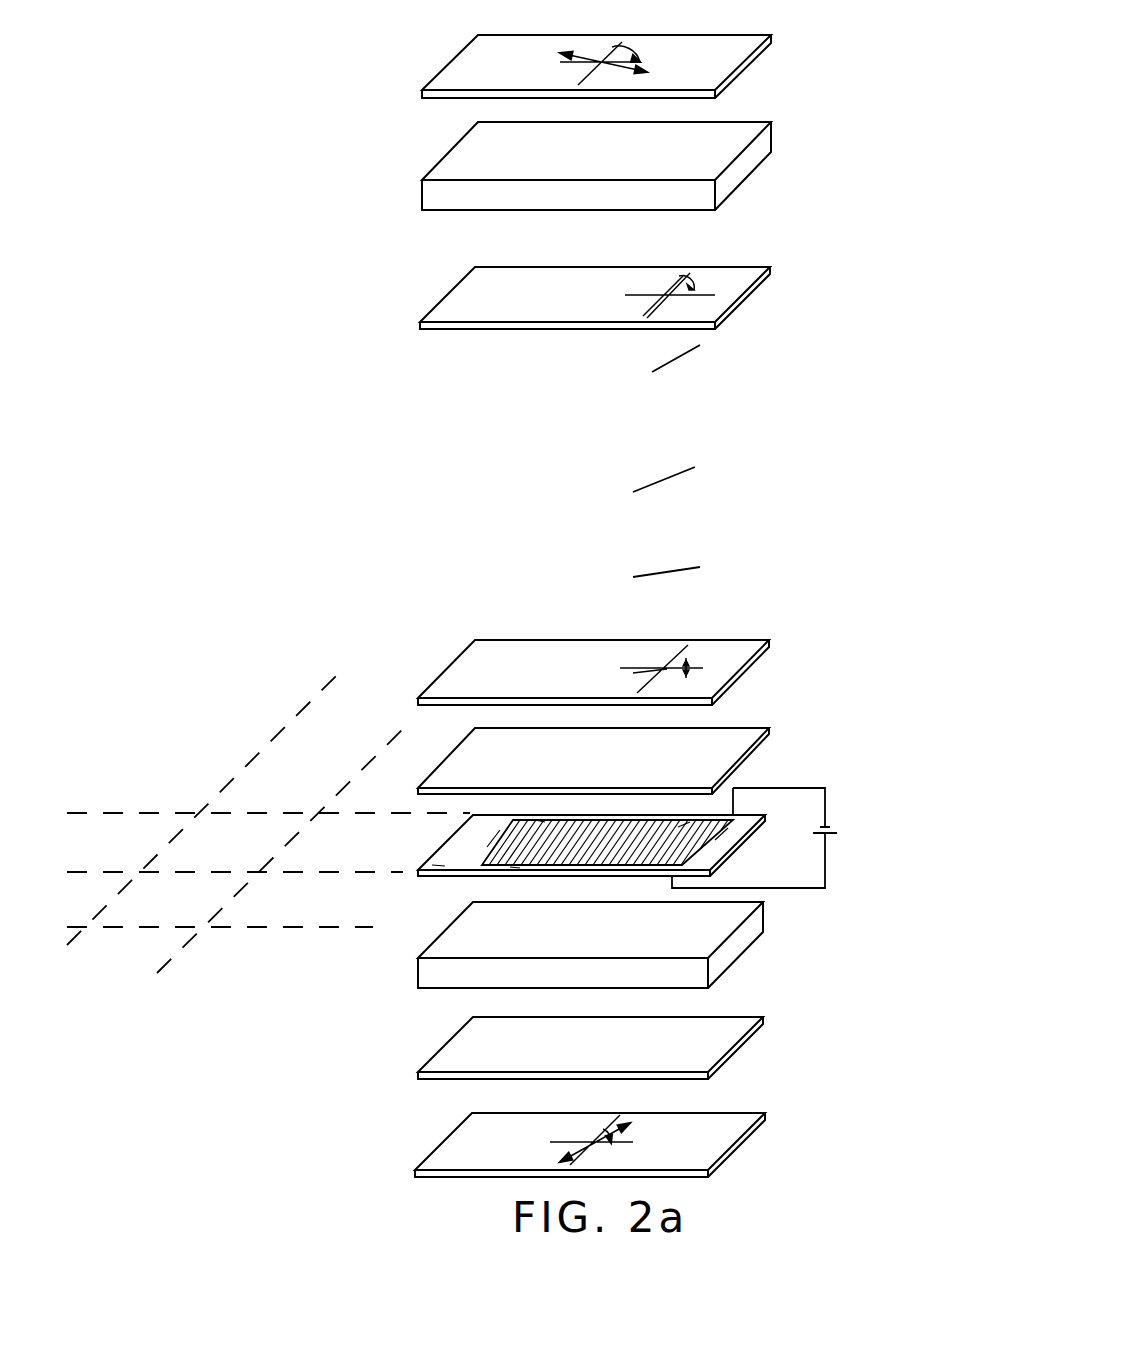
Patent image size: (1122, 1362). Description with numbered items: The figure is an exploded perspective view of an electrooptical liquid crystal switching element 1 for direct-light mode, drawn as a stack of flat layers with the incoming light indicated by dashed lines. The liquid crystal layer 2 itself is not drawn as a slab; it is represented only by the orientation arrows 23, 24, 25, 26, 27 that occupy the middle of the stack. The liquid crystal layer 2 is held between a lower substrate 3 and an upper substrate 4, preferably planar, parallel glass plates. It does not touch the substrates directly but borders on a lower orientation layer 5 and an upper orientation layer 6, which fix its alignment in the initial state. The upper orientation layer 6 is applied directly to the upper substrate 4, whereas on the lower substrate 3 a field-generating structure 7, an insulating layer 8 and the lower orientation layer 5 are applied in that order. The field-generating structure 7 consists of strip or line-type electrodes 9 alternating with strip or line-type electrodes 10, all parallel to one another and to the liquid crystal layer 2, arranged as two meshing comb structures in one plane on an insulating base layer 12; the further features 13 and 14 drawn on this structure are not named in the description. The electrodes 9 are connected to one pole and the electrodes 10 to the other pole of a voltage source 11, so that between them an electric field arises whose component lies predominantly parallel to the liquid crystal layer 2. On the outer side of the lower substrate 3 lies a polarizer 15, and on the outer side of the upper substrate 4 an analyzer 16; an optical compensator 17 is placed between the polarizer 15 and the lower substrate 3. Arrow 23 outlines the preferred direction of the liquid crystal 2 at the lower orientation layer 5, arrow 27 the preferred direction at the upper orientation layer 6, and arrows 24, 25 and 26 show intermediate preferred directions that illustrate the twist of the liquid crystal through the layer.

The electrooptical liquid crystal switching element 1 is at (840, 472).
The liquid crystal layer 2 is at (545, 524).
The lower substrate 3 is at (732, 952).
The upper substrate 4 is at (755, 157).
The lower orientation layer 5 is at (755, 660).
The upper orientation layer 6 is at (748, 278).
The field-generating structure 7 is at (430, 828).
The insulating layer 8 is at (752, 753).
The strip or line-type electrodes 9 is at (698, 850).
The strip or line-type electrodes 10 is at (728, 828).
The voltage source 11 is at (837, 827).
The insulating base layer 12 is at (432, 865).
The electrode support edge 13 is at (510, 867).
The electrode gap region 14 is at (535, 820).
The polarizer 15 is at (740, 1147).
The analyzer 16 is at (743, 43).
The optical compensator 17 is at (742, 1045).
The arrow 23 is at (692, 668).
The arrow 24 is at (672, 568).
The arrow 25 is at (675, 473).
The arrow 26 is at (683, 355).
The arrow 27 is at (680, 292).